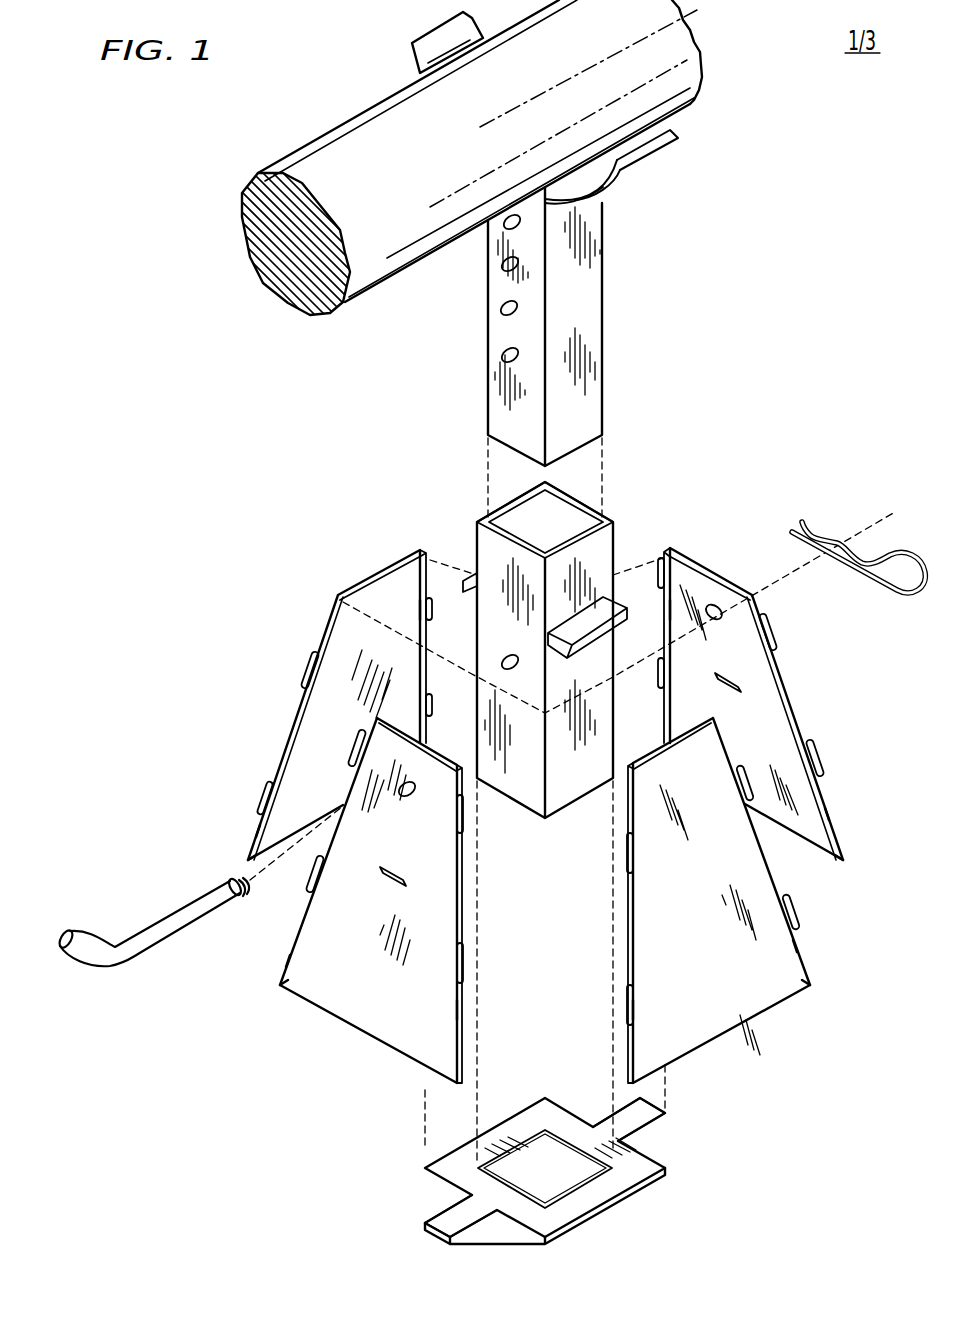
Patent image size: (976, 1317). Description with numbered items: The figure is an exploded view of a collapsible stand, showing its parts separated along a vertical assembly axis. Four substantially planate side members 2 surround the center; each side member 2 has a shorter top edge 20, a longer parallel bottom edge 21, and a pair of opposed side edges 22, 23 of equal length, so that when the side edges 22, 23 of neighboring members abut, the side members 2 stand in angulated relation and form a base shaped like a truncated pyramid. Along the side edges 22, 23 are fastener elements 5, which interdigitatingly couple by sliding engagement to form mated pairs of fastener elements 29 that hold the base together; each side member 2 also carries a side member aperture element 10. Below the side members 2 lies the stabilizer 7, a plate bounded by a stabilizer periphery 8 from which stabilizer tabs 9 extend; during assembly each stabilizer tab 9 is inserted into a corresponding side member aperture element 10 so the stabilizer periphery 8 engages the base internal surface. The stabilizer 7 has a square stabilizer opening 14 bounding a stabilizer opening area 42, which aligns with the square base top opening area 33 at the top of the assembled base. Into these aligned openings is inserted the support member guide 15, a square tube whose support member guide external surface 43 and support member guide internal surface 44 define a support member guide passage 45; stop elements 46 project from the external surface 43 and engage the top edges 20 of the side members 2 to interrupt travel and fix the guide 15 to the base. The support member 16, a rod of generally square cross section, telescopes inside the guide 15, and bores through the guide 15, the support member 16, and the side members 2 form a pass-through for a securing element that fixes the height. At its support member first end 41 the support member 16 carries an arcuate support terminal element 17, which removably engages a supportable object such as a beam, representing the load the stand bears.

The support terminal element 17 is at (688, 146).
The support member first end 41 is at (600, 211).
The support member 16 is at (614, 268).
The support member guide 15 is at (624, 516).
The support member guide external surface 43 is at (577, 498).
The support member guide internal surface 44 is at (528, 520).
The support member guide passage 45 is at (574, 531).
The stop element 46 is at (470, 586).
The base top opening area 33 is at (521, 703).
The side member 2 is at (290, 705).
The top edge 20 is at (421, 556).
The fastener element 5 is at (433, 600).
The side member aperture element 10 is at (390, 883).
The bottom edge 21 is at (248, 860).
The side edge 22 is at (248, 827).
The side edge 23 is at (292, 960).
The mated pair of fastener elements 29 is at (667, 632).
The stabilizer 7 is at (648, 1196).
The stabilizer periphery 8 is at (607, 1213).
The stabilizer tab 9 is at (628, 1122).
The stabilizer opening 14 is at (566, 1140).
The stabilizer opening area 42 is at (561, 1183).